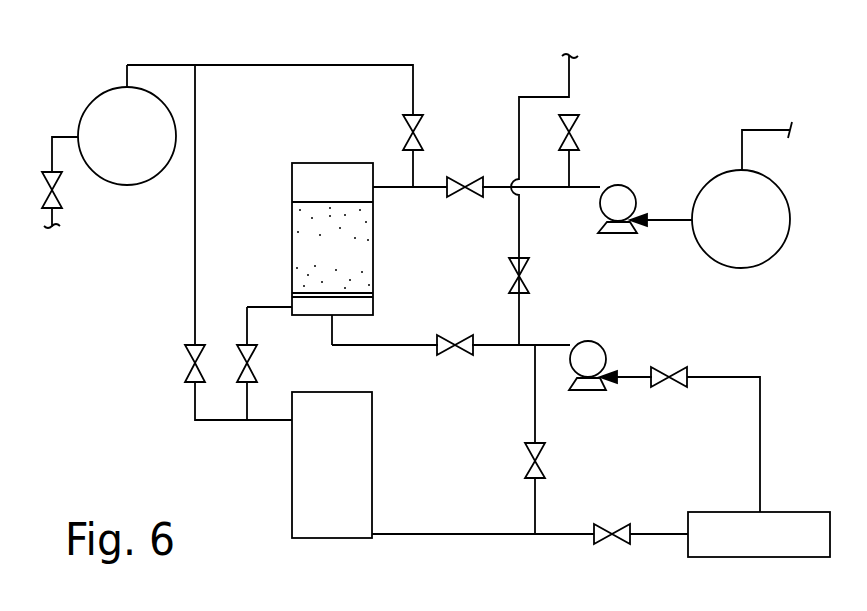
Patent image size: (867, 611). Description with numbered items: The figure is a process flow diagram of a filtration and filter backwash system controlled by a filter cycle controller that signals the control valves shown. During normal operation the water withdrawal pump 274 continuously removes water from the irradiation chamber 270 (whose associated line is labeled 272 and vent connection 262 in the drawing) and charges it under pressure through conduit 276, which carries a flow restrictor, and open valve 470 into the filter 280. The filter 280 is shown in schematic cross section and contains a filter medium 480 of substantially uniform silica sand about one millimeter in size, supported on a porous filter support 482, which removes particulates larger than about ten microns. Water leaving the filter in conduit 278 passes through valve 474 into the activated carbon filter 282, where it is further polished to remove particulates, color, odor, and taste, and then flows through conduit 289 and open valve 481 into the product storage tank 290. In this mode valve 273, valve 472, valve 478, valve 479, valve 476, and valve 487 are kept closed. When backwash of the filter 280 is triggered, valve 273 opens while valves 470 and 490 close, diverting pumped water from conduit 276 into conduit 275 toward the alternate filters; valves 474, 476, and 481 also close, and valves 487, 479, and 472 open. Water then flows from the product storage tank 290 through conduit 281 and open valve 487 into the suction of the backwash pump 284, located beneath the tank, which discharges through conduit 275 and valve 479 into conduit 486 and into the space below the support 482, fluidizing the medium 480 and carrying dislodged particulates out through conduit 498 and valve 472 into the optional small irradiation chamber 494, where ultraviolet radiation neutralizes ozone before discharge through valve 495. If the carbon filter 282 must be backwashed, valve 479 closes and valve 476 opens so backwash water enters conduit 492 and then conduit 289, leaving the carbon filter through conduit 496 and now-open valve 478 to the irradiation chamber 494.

The vent line break 262 is at (767, 130).
The irradiation chamber 270 is at (718, 172).
The supply line 272 is at (660, 222).
The valve 273 is at (578, 116).
The water withdrawal pump 274 is at (633, 192).
The conduit 275 is at (569, 80).
The conduit 276 is at (431, 186).
The conduit 278 is at (268, 308).
The filter 280 is at (292, 260).
The conduit 281 is at (625, 380).
The activated carbon filter 282 is at (372, 455).
The backwash pump 284 is at (594, 344).
The conduit 289 is at (478, 535).
The product storage tank 290 is at (776, 546).
The valve 470 is at (471, 196).
The valve 472 is at (421, 117).
The valve 474 is at (257, 371).
The valve 476 is at (545, 469).
The valve 478 is at (186, 372).
The valve 479 is at (441, 353).
The filter medium 480 is at (318, 226).
The valve 481 is at (612, 545).
The porous filter support 482 is at (352, 302).
The conduit 486 is at (385, 345).
The valve 487 is at (680, 386).
The valve 490 is at (526, 294).
The conduit 492 is at (535, 394).
The irradiation chamber 494 is at (100, 95).
The valve 495 is at (60, 203).
The conduit 496 is at (195, 297).
The conduit 498 is at (381, 65).